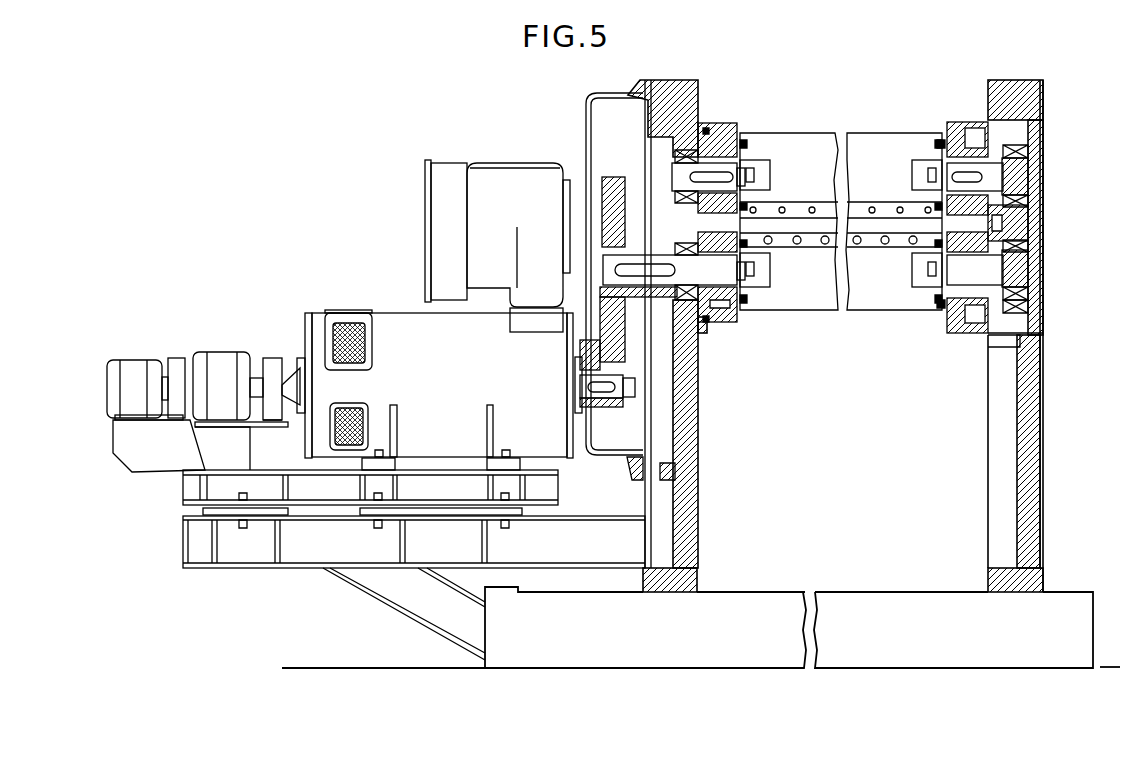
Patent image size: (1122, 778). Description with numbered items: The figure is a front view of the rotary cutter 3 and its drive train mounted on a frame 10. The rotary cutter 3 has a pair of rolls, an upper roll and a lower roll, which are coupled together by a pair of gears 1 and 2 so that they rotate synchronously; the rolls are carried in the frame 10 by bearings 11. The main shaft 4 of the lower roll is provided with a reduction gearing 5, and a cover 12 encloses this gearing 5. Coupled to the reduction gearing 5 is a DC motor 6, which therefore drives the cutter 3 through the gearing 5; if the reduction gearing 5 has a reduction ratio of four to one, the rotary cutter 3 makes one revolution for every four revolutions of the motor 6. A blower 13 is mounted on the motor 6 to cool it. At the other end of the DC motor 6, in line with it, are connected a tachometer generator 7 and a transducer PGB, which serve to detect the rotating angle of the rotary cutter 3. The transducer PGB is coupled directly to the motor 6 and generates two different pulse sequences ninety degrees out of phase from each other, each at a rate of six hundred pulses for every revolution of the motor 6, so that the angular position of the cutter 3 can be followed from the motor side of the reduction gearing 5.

The gear 1 is at (1017, 310).
The gear 2 is at (975, 131).
The rotary cutter 3 is at (812, 253).
The main shaft 4 is at (735, 308).
The reduction gearing 5 is at (625, 335).
The DC motor 6 is at (405, 328).
The tachometer generator 7 is at (228, 367).
The frame 10 is at (697, 493).
The bearings 11 is at (1020, 232).
The cover 12 is at (597, 95).
The blower 13 is at (527, 178).
The transducer PGB is at (147, 373).